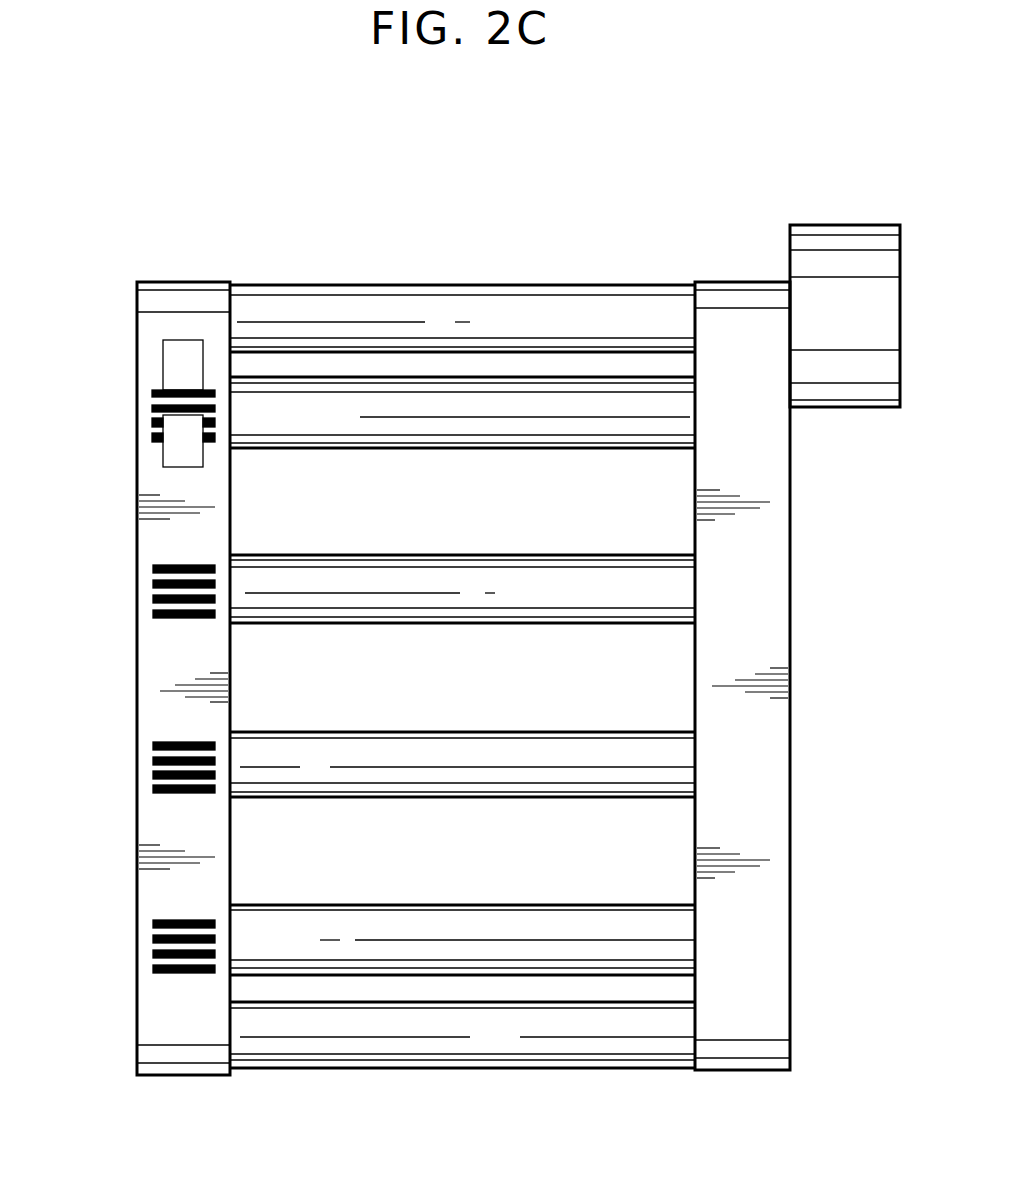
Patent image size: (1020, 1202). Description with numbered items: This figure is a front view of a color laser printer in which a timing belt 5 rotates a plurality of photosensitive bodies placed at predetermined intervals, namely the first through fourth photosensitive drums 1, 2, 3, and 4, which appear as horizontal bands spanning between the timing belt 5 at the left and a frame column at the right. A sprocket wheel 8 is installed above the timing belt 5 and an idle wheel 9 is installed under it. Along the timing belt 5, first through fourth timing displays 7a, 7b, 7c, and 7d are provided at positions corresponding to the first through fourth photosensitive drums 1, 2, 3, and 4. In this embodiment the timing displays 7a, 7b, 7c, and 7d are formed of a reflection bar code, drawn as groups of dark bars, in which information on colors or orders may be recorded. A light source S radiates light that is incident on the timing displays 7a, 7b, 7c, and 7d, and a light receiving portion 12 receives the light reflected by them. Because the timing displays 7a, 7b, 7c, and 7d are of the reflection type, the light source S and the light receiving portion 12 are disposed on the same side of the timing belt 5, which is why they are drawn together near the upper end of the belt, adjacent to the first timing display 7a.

The first photosensitive drum 1 is at (355, 440).
The second photosensitive drum 2 is at (542, 562).
The third photosensitive drum 3 is at (542, 738).
The fourth photosensitive drum 4 is at (542, 910).
The timing belt 5 is at (182, 283).
The first timing display 7a is at (151, 400).
The second timing display 7b is at (152, 581).
The third timing display 7c is at (152, 759).
The fourth timing display 7d is at (152, 936).
The sprocket wheel 8 is at (472, 285).
The idle wheel 9 is at (480, 1065).
The light receiving portion 12 is at (163, 450).
The light source S is at (163, 354).